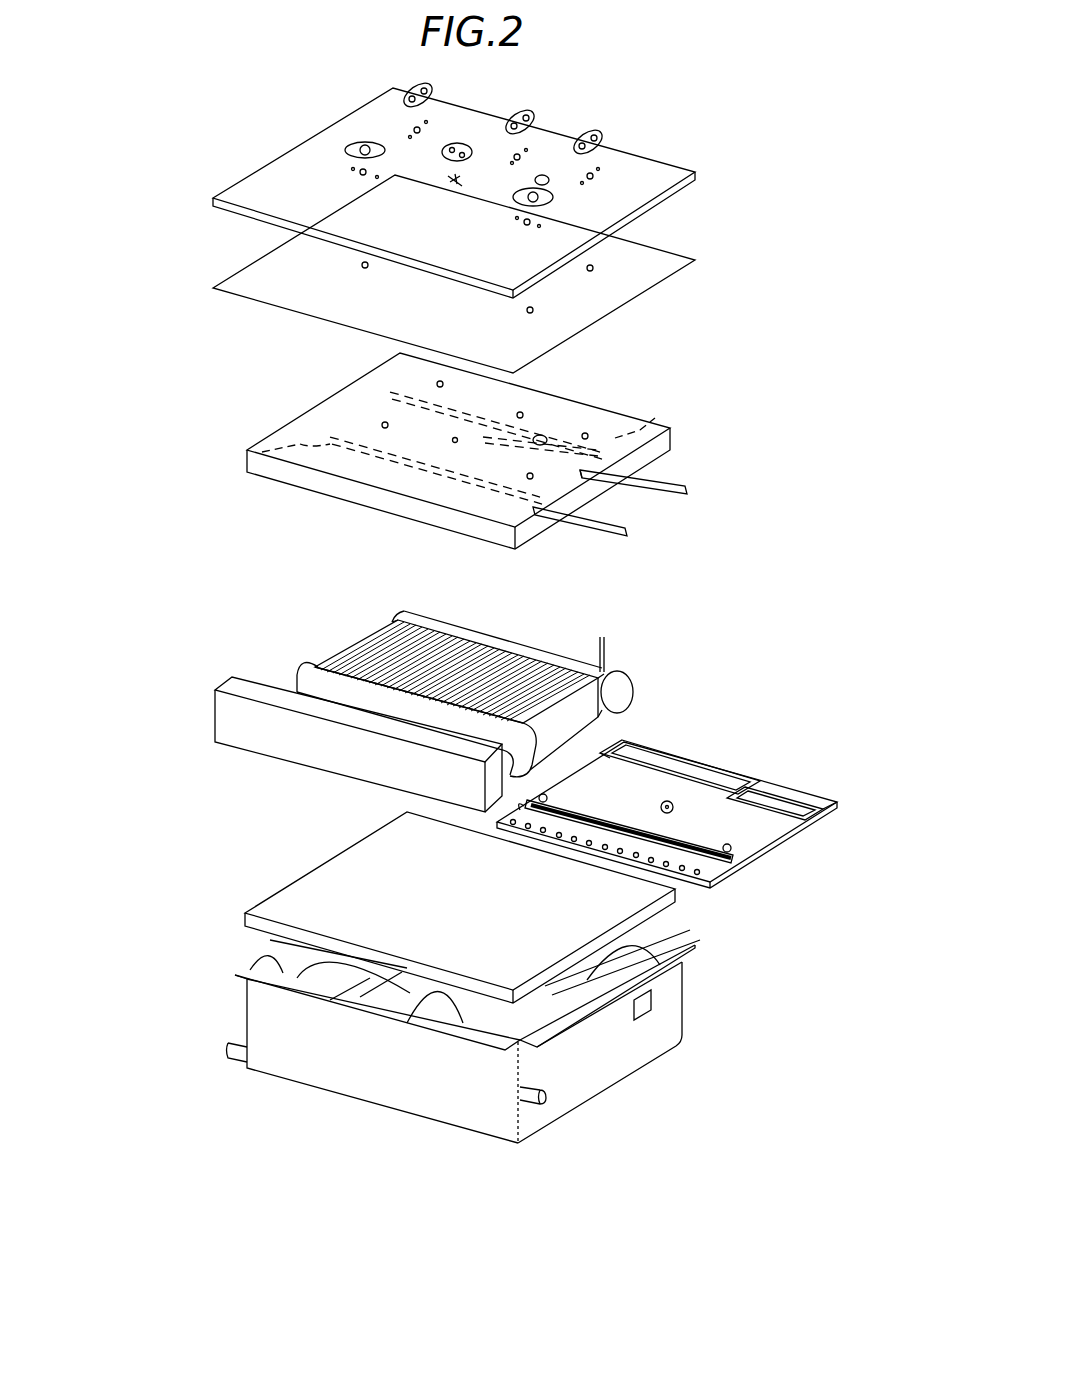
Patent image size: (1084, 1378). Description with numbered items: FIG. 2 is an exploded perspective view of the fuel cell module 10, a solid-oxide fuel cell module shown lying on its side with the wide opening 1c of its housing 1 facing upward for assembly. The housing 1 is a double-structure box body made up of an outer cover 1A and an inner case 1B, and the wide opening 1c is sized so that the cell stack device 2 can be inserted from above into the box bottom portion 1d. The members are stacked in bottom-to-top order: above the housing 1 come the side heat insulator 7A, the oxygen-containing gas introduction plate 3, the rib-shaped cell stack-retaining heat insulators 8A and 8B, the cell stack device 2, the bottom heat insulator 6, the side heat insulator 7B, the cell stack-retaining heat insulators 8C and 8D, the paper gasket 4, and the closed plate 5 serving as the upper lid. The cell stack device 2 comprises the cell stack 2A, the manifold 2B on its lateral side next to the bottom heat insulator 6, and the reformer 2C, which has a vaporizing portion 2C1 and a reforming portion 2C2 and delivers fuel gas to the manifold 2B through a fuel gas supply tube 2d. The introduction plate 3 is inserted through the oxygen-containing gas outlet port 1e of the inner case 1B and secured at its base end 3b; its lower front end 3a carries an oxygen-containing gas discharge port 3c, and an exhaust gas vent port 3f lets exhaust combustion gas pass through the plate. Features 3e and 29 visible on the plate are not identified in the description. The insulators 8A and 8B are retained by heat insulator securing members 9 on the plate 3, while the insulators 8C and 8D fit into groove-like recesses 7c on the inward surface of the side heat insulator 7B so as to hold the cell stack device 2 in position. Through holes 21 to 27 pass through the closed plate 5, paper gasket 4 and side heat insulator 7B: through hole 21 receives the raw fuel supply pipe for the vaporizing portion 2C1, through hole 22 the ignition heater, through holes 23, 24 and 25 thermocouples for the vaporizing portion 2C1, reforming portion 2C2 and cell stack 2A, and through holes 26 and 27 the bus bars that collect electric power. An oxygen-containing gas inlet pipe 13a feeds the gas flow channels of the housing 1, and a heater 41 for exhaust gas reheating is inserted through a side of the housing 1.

The housing 1 is at (460, 1070).
The outer cover 1A is at (450, 1080).
The inner case 1B is at (407, 1013).
The wide opening 1c is at (405, 990).
The box bottom portion 1d is at (255, 978).
The oxygen-containing gas outlet port 1e is at (684, 958).
The cell stack device 2 is at (443, 653).
The cell stack 2A is at (345, 665).
The manifold 2B is at (292, 680).
The reformer 2C is at (638, 680).
The vaporizing portion 2C1 is at (600, 650).
The reforming portion 2C2 is at (460, 615).
The fuel gas supply tube 2d is at (340, 655).
The oxygen-containing gas introduction plate 3 is at (700, 832).
The lower front end 3a is at (690, 895).
The base end 3b is at (690, 752).
The oxygen-containing gas discharge port 3c is at (700, 876).
The flat portion 3e is at (730, 776).
The exhaust gas vent port 3f is at (822, 802).
The paper gasket 4 is at (700, 263).
The closed plate 5 is at (700, 174).
The bottom heat insulator 6 is at (208, 711).
The side heat insulator 7A is at (238, 915).
The side heat insulator 7B is at (685, 437).
The groove-like recesses 7c is at (252, 448).
The cell stack-retaining heat insulator 8A is at (735, 848).
The cell stack-retaining heat insulator 8B is at (800, 795).
The cell stack-retaining heat insulator 8C is at (628, 531).
The cell stack-retaining heat insulator 8D is at (688, 489).
The heat insulator securing member 9 is at (522, 808).
The fuel cell module 10 is at (460, 1070).
The oxygen-containing gas inlet pipe 13a is at (536, 1105).
The through hole 21 is at (594, 177).
The through hole 22 is at (549, 183).
The through hole 23 is at (514, 157).
The through hole 24 is at (414, 130).
The through hole 25 is at (455, 180).
The through hole 26 is at (524, 225).
The through hole 27 is at (360, 175).
The hole 29 is at (674, 807).
The heater 41 is at (225, 1060).